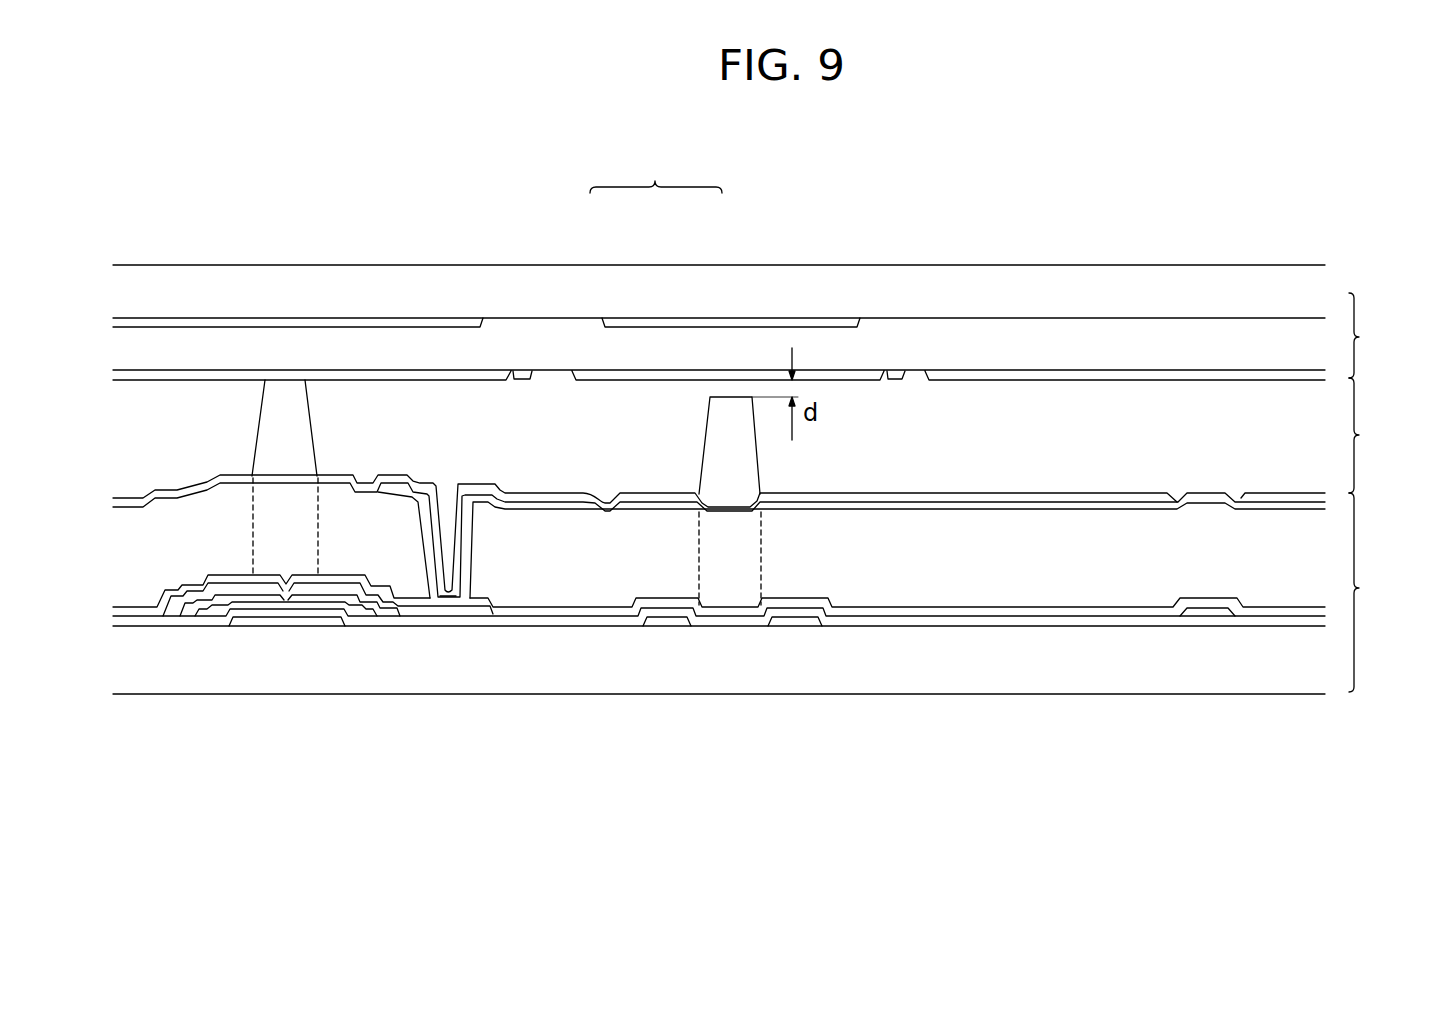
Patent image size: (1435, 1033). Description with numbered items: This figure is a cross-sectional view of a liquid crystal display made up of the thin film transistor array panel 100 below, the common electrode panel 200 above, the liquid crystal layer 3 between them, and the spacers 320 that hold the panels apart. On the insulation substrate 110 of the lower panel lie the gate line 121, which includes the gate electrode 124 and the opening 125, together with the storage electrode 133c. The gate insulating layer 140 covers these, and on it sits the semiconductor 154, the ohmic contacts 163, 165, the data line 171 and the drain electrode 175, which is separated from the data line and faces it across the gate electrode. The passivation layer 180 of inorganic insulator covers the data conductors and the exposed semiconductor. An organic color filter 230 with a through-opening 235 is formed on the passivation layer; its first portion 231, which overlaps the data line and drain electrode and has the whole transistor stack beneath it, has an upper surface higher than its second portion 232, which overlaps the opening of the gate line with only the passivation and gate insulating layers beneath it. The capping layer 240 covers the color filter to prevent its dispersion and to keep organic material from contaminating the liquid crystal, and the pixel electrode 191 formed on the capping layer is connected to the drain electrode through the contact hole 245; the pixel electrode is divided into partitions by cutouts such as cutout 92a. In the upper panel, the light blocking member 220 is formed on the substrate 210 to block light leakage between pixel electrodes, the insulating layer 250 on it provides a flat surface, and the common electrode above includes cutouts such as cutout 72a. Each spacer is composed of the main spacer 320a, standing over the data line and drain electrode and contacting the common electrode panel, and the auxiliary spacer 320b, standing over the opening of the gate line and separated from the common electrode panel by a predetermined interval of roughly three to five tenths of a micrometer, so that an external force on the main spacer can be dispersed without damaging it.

The thin film transistor array panel 100 is at (1374, 592).
The common electrode panel 200 is at (1373, 335).
The liquid crystal layer 3 is at (1362, 435).
The insulation substrate 110 is at (449, 685).
The gate line 121 is at (672, 622).
The gate electrode 124 is at (290, 623).
The opening 125 is at (700, 624).
The storage electrode 133c is at (1210, 612).
The gate insulating layer 140 is at (560, 622).
The semiconductor stripe 154 is at (240, 603).
The ohmic contact 163 is at (207, 606).
The ohmic contact 165 is at (367, 604).
The data line 171 is at (182, 608).
The drain electrode 175 is at (394, 608).
The passivation layer 180 is at (602, 610).
The pixel electrode 191 is at (524, 497).
The color filter 230 is at (925, 575).
The first portion 231 is at (266, 560).
The second portion 232 is at (750, 568).
The through-opening 235 is at (478, 562).
The capping layer 240 is at (997, 508).
The contact hole 245 is at (444, 598).
The substrate 210 is at (320, 307).
The light blocking member 220 is at (232, 322).
The insulating layer 250 is at (1150, 340).
The cutout 72a is at (530, 372).
The cutout 92a is at (1175, 490).
The spacer 320 is at (656, 172).
The main spacer 320a is at (313, 420).
The auxiliary spacer 320b is at (703, 433).